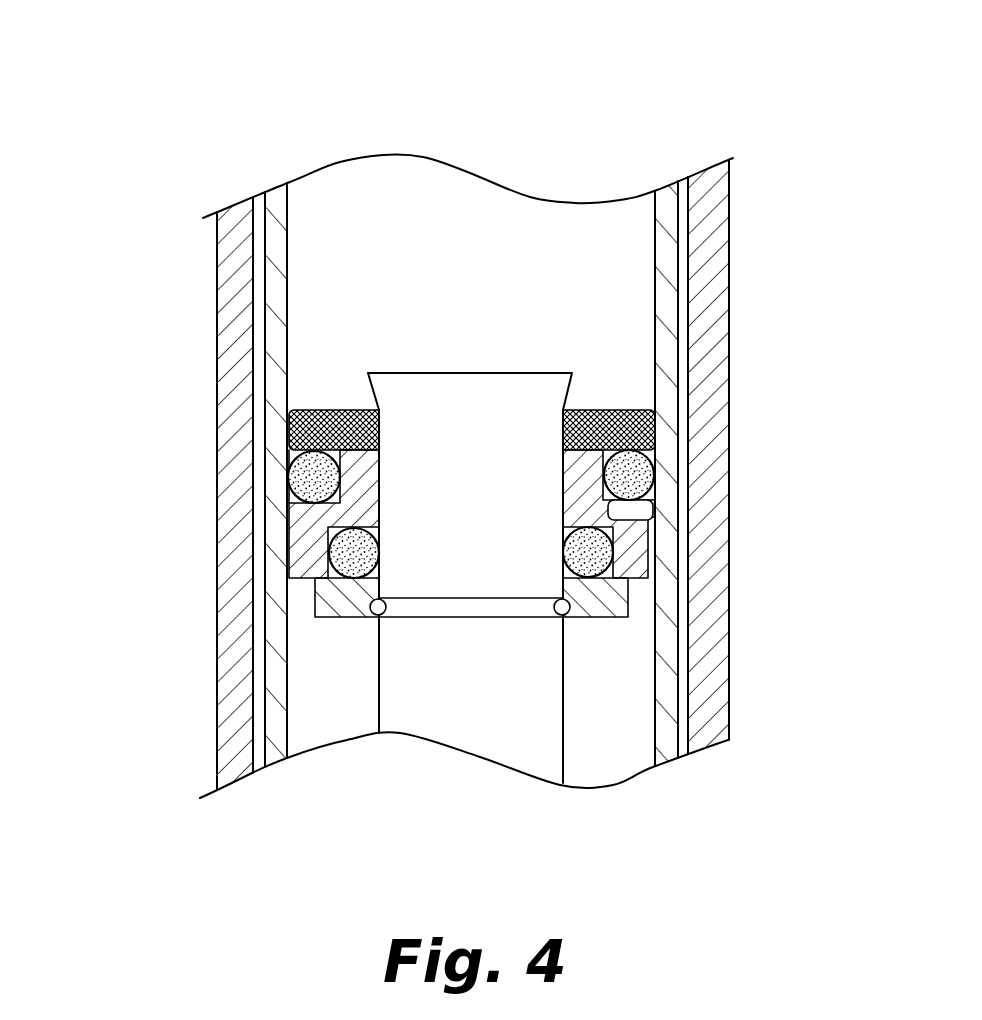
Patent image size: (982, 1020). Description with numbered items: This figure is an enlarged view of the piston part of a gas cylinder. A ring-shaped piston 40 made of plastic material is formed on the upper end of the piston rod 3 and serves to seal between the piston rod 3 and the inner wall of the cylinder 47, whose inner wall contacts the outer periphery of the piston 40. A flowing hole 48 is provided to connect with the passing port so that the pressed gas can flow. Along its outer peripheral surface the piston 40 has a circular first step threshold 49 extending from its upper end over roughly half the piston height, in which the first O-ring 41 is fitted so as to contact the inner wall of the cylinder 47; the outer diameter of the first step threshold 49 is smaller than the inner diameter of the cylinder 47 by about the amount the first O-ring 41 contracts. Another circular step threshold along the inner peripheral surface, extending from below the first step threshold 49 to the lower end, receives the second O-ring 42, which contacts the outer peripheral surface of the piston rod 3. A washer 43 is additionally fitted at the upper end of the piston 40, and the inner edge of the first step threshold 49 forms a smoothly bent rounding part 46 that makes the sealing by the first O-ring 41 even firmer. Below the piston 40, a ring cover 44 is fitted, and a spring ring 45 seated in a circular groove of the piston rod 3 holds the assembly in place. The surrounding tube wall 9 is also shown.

The piston rod 3 is at (535, 693).
The outer cylinder tube 9 is at (238, 508).
The piston 40 is at (300, 543).
The first O-ring 41 is at (653, 472).
The second O-ring 42 is at (590, 556).
The washer 43 is at (622, 410).
The ring cover 44 is at (315, 600).
The spring ring 45 is at (376, 615).
The rounding part 46 is at (653, 518).
The cylinder 47 is at (275, 350).
The flowing hole 48 is at (258, 200).
The first step threshold 49 is at (557, 477).